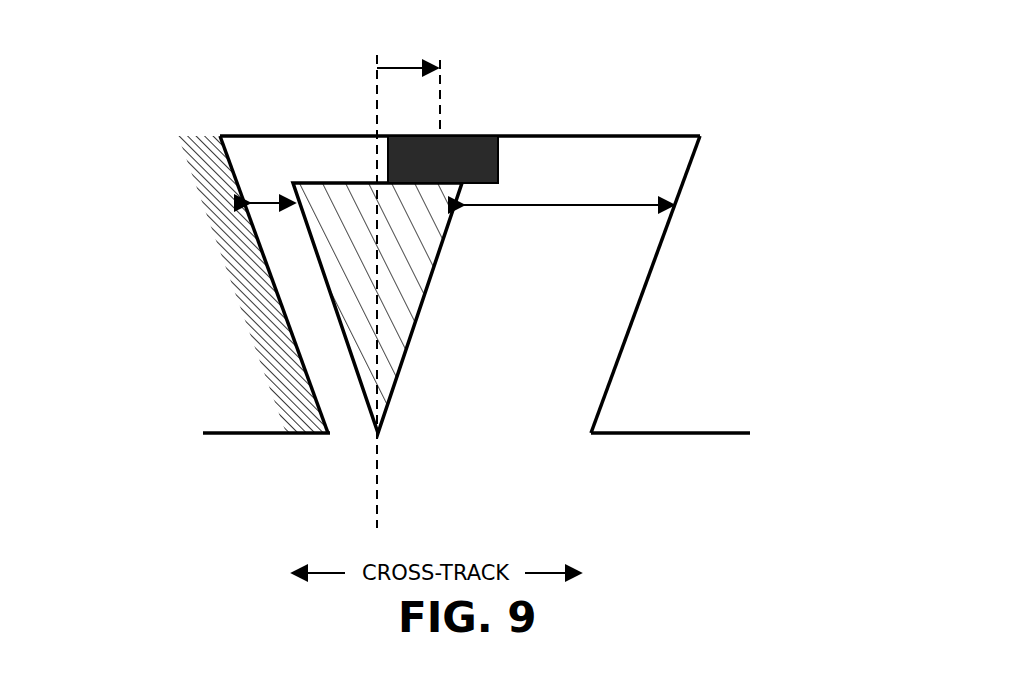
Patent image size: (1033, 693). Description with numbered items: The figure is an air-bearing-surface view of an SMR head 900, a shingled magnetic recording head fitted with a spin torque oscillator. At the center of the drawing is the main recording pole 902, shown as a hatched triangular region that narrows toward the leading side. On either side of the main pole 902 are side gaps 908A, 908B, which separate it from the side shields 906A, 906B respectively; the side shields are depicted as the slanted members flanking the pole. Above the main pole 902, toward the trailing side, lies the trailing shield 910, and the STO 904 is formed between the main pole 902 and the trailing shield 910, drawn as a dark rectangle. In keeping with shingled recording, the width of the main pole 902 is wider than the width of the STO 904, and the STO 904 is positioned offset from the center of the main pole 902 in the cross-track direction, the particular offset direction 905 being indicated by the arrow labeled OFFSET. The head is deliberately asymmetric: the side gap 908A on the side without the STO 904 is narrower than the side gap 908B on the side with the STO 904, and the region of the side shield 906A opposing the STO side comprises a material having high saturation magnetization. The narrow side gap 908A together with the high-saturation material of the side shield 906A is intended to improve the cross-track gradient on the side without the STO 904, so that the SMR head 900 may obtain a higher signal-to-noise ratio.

The SMR head 900 is at (172, 70).
The main pole 902 is at (403, 303).
The STO 904 is at (470, 150).
The offset direction 905 is at (400, 69).
The side shield 906A is at (295, 412).
The side shield 906B is at (638, 411).
The side gap 908A is at (269, 198).
The side gap 908B is at (545, 205).
The trailing shield 910 is at (635, 127).